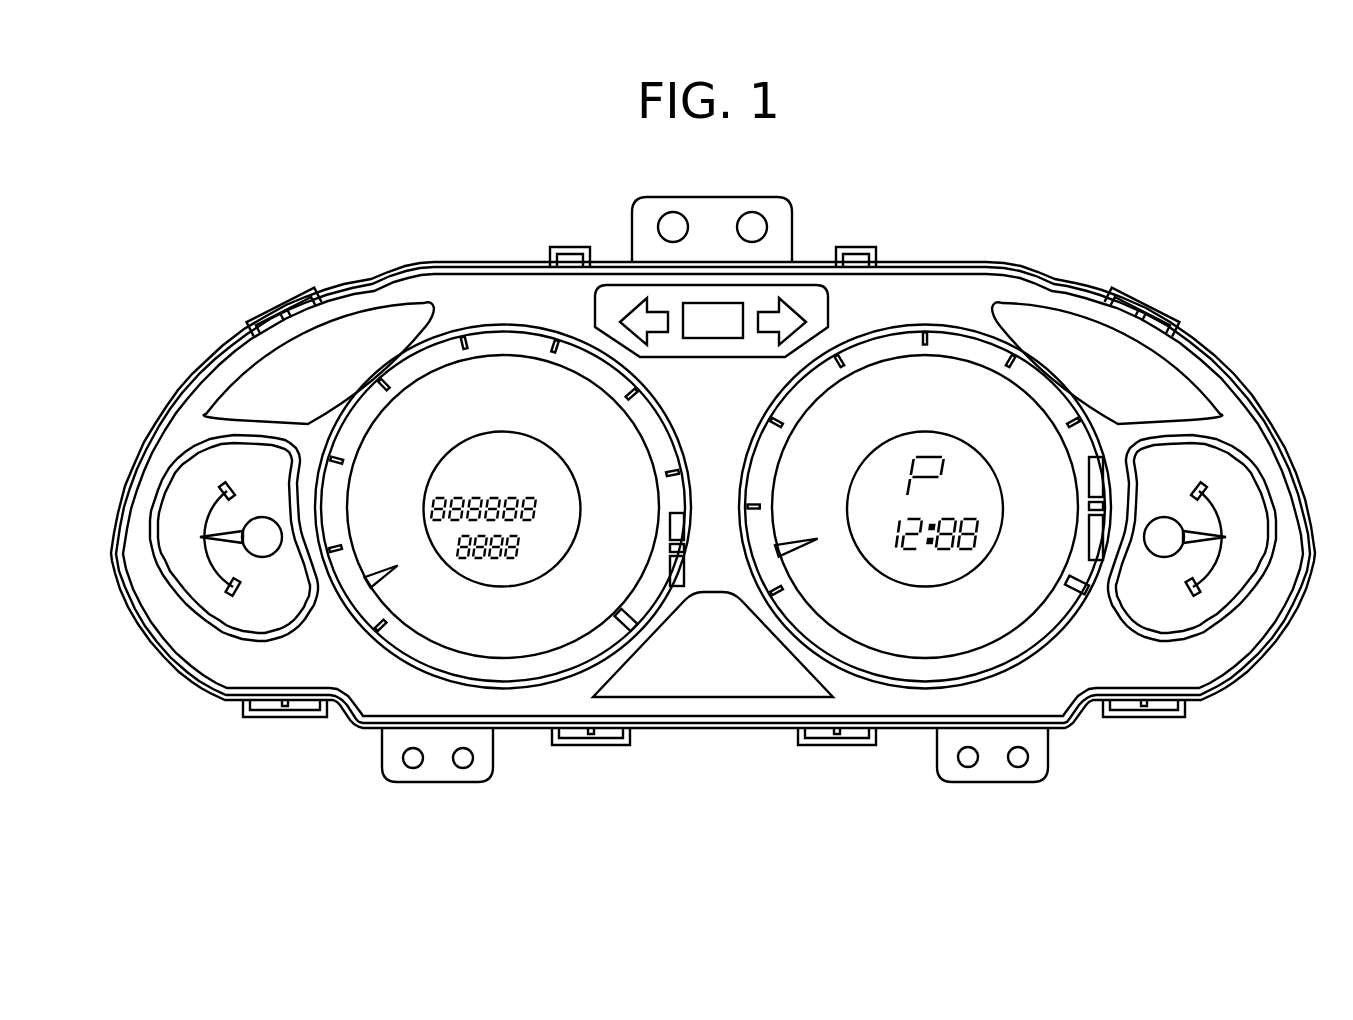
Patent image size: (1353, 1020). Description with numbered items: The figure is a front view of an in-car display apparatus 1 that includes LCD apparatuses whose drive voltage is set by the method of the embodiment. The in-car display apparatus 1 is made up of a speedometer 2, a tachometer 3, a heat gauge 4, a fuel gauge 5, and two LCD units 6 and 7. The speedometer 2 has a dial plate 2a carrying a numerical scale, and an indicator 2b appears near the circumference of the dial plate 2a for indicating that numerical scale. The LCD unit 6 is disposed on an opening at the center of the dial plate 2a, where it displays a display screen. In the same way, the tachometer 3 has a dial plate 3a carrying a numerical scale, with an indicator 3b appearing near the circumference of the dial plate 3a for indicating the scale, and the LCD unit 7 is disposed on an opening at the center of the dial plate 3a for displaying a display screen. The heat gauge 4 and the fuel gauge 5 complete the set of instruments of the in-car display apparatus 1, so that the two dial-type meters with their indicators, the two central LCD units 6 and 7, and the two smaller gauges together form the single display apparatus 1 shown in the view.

The in-car display apparatus 1 is at (877, 223).
The speedometer 2 is at (495, 322).
The dial plate 2a is at (433, 387).
The indicator 2b is at (385, 600).
The tachometer 3 is at (930, 325).
The dial plate 3a is at (965, 375).
The indicator 3b is at (790, 562).
The heat gauge 4 is at (188, 480).
The fuel gauge 5 is at (1236, 474).
The LCD unit 6 is at (523, 568).
The LCD unit 7 is at (962, 563).